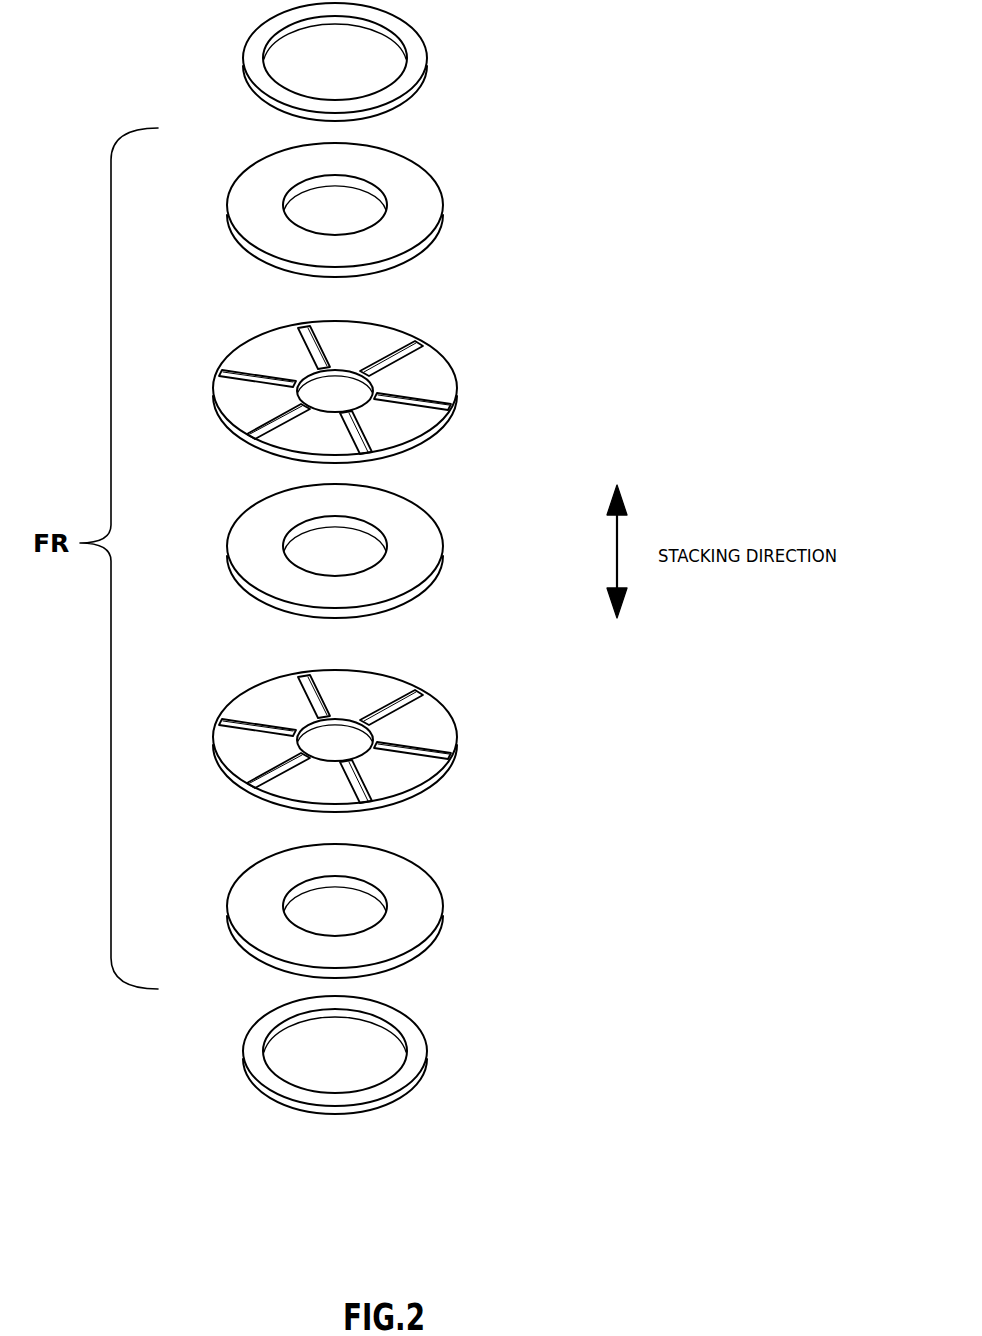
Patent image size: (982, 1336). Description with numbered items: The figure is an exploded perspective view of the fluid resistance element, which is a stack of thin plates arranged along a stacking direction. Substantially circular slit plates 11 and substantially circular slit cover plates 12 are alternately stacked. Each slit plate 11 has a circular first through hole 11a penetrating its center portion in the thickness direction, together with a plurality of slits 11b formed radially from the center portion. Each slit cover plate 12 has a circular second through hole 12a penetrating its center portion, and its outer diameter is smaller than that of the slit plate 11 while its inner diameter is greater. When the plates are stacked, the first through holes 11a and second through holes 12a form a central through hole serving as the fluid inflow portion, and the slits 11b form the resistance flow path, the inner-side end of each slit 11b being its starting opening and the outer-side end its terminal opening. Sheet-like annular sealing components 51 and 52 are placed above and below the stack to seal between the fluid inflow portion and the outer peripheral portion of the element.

The sealing component 51 is at (413, 30).
The sealing component 52 is at (413, 1023).
The slit cover plate 12 is at (413, 163).
The second through hole 12a is at (313, 187).
The slit plate 11 is at (447, 358).
The first through hole 11a is at (347, 372).
The slit 11b is at (303, 325).